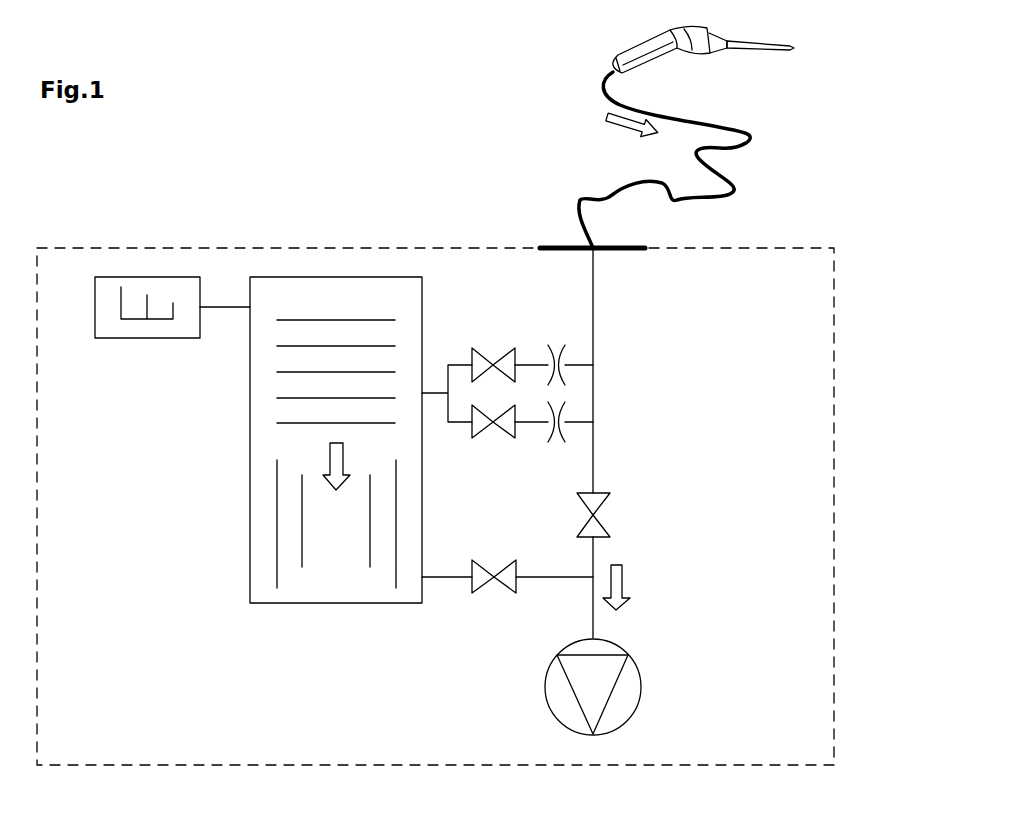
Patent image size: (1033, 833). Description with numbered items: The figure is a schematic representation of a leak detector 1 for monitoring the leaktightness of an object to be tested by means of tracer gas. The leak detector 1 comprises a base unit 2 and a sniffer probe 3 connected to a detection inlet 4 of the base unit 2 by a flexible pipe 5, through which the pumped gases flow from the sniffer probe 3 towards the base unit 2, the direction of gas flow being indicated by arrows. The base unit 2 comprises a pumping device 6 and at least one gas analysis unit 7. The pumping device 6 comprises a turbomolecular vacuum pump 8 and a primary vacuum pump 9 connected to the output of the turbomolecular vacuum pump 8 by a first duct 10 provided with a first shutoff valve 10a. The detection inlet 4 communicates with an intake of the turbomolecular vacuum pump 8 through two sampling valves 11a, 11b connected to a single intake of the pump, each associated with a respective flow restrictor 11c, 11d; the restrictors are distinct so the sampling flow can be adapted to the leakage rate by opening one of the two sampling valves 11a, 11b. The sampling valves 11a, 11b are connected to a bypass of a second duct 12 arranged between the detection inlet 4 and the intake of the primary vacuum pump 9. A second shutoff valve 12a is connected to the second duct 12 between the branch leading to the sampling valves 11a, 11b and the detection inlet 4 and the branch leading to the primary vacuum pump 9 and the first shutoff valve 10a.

The leak detector 1 is at (355, 138).
The base unit 2 is at (245, 248).
The sniffer probe 3 is at (628, 35).
The detection inlet 4 is at (557, 243).
The flexible pipe 5 is at (727, 176).
The pumping device 6 is at (273, 650).
The gas analysis unit 7 is at (135, 277).
The turbomolecular vacuum pump 8 is at (236, 469).
The primary vacuum pump 9 is at (654, 691).
The first duct 10 is at (447, 580).
The first shutoff valve 10a is at (502, 594).
The sampling valve 11a is at (483, 348).
The sampling valve 11b is at (492, 440).
The flow restrictor 11c is at (523, 352).
The flow restrictor 11d is at (530, 425).
The second duct 12 is at (597, 393).
The second shutoff valve 12a is at (600, 518).